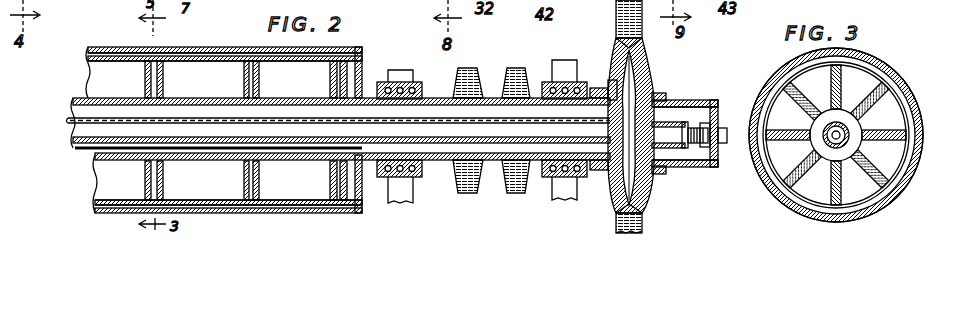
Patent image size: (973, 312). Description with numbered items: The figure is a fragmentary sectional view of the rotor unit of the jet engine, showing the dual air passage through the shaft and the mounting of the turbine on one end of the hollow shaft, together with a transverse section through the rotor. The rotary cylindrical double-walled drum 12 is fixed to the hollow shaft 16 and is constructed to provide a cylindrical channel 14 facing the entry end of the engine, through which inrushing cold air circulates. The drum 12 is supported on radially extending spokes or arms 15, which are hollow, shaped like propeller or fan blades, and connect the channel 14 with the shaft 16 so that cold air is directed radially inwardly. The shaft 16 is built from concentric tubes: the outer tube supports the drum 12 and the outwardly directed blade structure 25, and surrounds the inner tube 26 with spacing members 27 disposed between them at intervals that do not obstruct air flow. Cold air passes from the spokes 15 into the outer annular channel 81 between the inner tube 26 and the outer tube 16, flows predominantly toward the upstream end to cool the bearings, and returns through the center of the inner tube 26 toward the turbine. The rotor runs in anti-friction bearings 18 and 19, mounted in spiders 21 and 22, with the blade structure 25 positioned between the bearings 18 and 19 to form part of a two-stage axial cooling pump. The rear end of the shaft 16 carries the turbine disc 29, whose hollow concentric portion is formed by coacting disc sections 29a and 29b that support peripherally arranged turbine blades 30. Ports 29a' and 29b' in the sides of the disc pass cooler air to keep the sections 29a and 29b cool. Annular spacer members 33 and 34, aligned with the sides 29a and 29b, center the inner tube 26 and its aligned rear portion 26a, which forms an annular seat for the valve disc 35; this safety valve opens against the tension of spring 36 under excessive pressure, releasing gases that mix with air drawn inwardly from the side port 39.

In FIG. 2, the rotary cylindrical double-walled drum 12 is at (131, 47).
In FIG. 3, the rotary cylindrical double-walled drum 12 is at (776, 85).
In FIG. 2, the cylindrical channel 14 is at (88, 52).
In FIG. 3, the cylindrical channel 14 is at (876, 72).
In FIG. 2, the spokes or arms 15 is at (164, 80).
In FIG. 3, the spokes or arms 15 is at (900, 118).
In FIG. 2, the hollow shaft 16 is at (76, 99).
In FIG. 3, the hollow shaft 16 is at (901, 166).
In FIG. 2, the anti-friction bearings 18 is at (392, 82).
In FIG. 2, the anti-friction bearings 19 is at (567, 82).
In FIG. 2, the spider 21 is at (414, 76).
In FIG. 2, the spider 22 is at (554, 195).
In FIG. 2, the outwardly directed blade structure 25 is at (470, 71).
In FIG. 2, the inner tube 26 is at (73, 141).
In FIG. 3, the inner tube 26 is at (830, 140).
In FIG. 2, the aligned portion of the inner tube 26a is at (704, 100).
In FIG. 3, the spacing members 27 is at (849, 130).
In FIG. 2, the turbine disc 29 is at (660, 95).
In FIG. 2, the disc section 29a is at (600, 71).
In FIG. 2, the port 29a' is at (600, 196).
In FIG. 2, the disc section 29b is at (685, 108).
In FIG. 2, the port 29b' is at (676, 198).
In FIG. 2, the turbine blades 30 is at (616, 42).
In FIG. 2, the annular spacer member 33 is at (597, 88).
In FIG. 2, the annular spacer member 34 is at (678, 168).
In FIG. 2, the valve disc 35 is at (704, 148).
In FIG. 2, the spring 36 is at (704, 128).
In FIG. 2, the side port 39 is at (611, 2).
In FIG. 2, the outer annular channel 81 is at (70, 118).